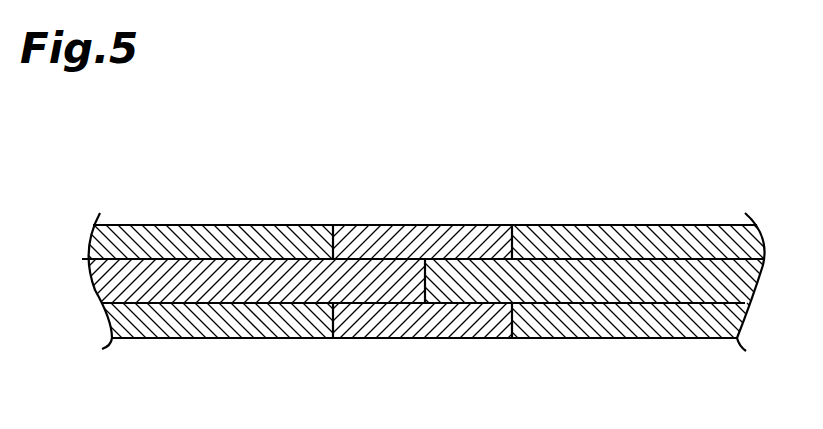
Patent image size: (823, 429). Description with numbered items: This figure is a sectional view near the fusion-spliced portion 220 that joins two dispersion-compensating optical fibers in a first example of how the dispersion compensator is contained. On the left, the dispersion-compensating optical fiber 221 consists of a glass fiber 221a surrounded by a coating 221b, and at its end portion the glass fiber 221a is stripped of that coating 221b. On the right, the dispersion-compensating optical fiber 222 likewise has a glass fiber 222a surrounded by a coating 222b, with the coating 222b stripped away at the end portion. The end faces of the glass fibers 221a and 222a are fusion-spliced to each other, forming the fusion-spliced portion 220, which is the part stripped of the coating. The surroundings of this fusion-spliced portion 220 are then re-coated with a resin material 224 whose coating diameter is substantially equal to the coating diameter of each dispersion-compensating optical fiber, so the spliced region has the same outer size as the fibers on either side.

The fusion-spliced portion 220 is at (512, 149).
The dispersion-compensating optical fiber 221 is at (257, 225).
The glass fiber 221a is at (157, 303).
The coating 221b is at (158, 235).
The dispersion-compensating optical fiber 222 is at (618, 225).
The glass fiber 222a is at (587, 290).
The coating 222b is at (712, 240).
The resin material 224 is at (427, 225).